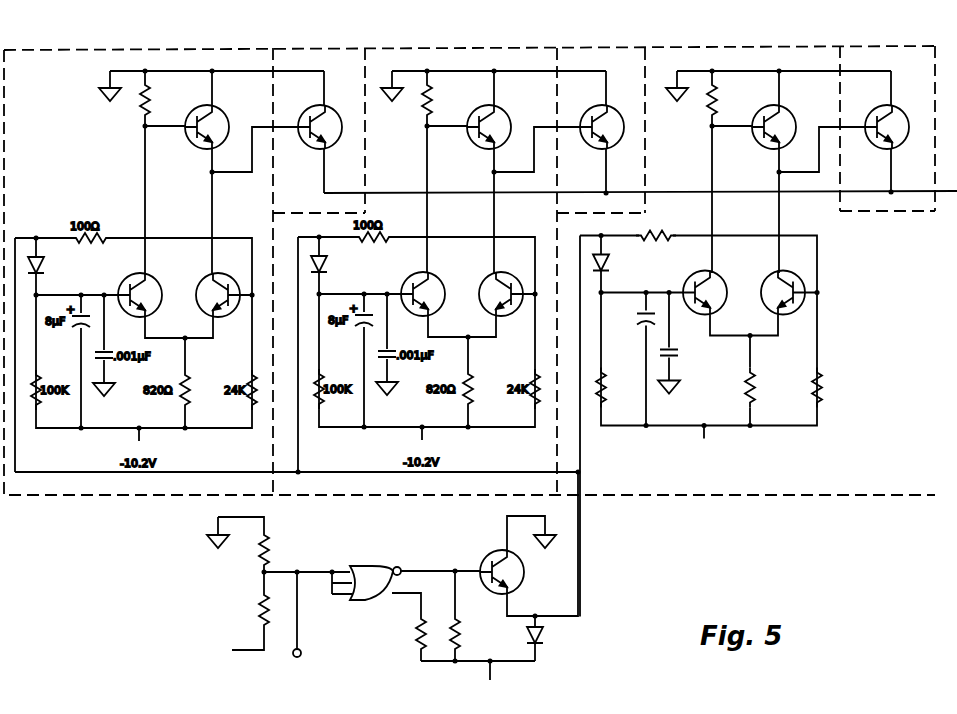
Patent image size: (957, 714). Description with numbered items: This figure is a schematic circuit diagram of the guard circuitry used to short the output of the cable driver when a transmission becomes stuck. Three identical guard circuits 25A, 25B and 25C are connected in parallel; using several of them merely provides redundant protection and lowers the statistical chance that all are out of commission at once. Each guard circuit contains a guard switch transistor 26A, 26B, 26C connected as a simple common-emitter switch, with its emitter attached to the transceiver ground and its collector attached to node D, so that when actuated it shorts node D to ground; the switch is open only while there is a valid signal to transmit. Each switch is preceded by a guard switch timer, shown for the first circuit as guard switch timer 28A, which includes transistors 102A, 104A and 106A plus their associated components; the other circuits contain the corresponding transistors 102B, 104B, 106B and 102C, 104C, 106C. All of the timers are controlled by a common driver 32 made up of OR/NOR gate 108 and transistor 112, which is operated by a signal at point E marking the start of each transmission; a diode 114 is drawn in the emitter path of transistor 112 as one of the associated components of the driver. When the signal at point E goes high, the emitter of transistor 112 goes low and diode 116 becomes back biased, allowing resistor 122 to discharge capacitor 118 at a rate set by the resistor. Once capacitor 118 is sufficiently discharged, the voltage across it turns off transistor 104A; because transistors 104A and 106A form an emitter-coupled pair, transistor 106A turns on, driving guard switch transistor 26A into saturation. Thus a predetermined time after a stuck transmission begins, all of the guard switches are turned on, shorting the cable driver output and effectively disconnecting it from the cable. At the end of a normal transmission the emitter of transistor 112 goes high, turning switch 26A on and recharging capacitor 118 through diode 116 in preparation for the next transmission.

The guard circuit 25A is at (787, 149).
The guard circuit 25B is at (502, 149).
The guard circuit 25C is at (147, 57).
The guard switch transistor 26A is at (880, 135).
The guard switch transistor 26B is at (595, 135).
The guard switch transistor 26C is at (314, 144).
The guard switch timer 28A is at (734, 417).
The transistor 102A is at (759, 134).
The transistor 102B is at (474, 134).
The transistor 102C is at (194, 143).
The transistor 104A is at (686, 286).
The transistor 104B is at (401, 287).
The transistor 104C is at (124, 282).
The transistor 106A is at (767, 286).
The transistor 106B is at (485, 287).
The transistor 106C is at (202, 282).
The diode 116 is at (618, 263).
The capacitor 118 is at (633, 332).
The resistor 122 is at (617, 395).
The driver 32 is at (352, 662).
The OR/NOR gate 108 is at (366, 566).
The transistor 112 is at (480, 561).
The diode 114 is at (541, 637).